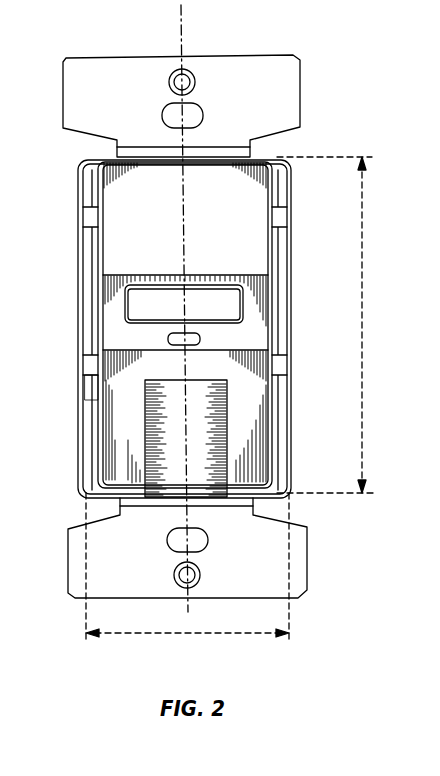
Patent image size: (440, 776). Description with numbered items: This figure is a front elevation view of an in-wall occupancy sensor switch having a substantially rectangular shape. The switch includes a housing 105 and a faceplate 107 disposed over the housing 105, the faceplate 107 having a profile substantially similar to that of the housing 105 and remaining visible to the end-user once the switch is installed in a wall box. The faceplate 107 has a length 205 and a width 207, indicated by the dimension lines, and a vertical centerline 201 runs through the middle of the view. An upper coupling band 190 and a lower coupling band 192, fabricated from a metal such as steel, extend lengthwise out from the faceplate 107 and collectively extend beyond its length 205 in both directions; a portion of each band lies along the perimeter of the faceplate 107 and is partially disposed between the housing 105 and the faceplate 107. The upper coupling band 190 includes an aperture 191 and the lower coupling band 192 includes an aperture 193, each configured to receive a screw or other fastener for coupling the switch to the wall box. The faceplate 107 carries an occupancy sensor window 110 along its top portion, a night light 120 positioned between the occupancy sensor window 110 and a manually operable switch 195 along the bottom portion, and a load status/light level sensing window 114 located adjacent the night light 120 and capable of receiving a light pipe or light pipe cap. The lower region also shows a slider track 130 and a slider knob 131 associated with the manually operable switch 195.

The housing 105 is at (436, 6).
The faceplate 107 is at (115, 363).
The occupancy sensor window 110 is at (159, 228).
The load status/light level sensing window 114 is at (200, 340).
The night light 120 is at (142, 300).
The slider track 130 is at (118, 455).
The slider knob 131 is at (202, 452).
The upper coupling band 190 is at (280, 72).
The aperture 191 is at (168, 82).
The lower coupling band 192 is at (307, 560).
The aperture 193 is at (175, 573).
The manually operable switch 195 is at (98, 405).
The vertical centerline 201 is at (182, 43).
The length 205 is at (362, 313).
The width 207 is at (190, 636).